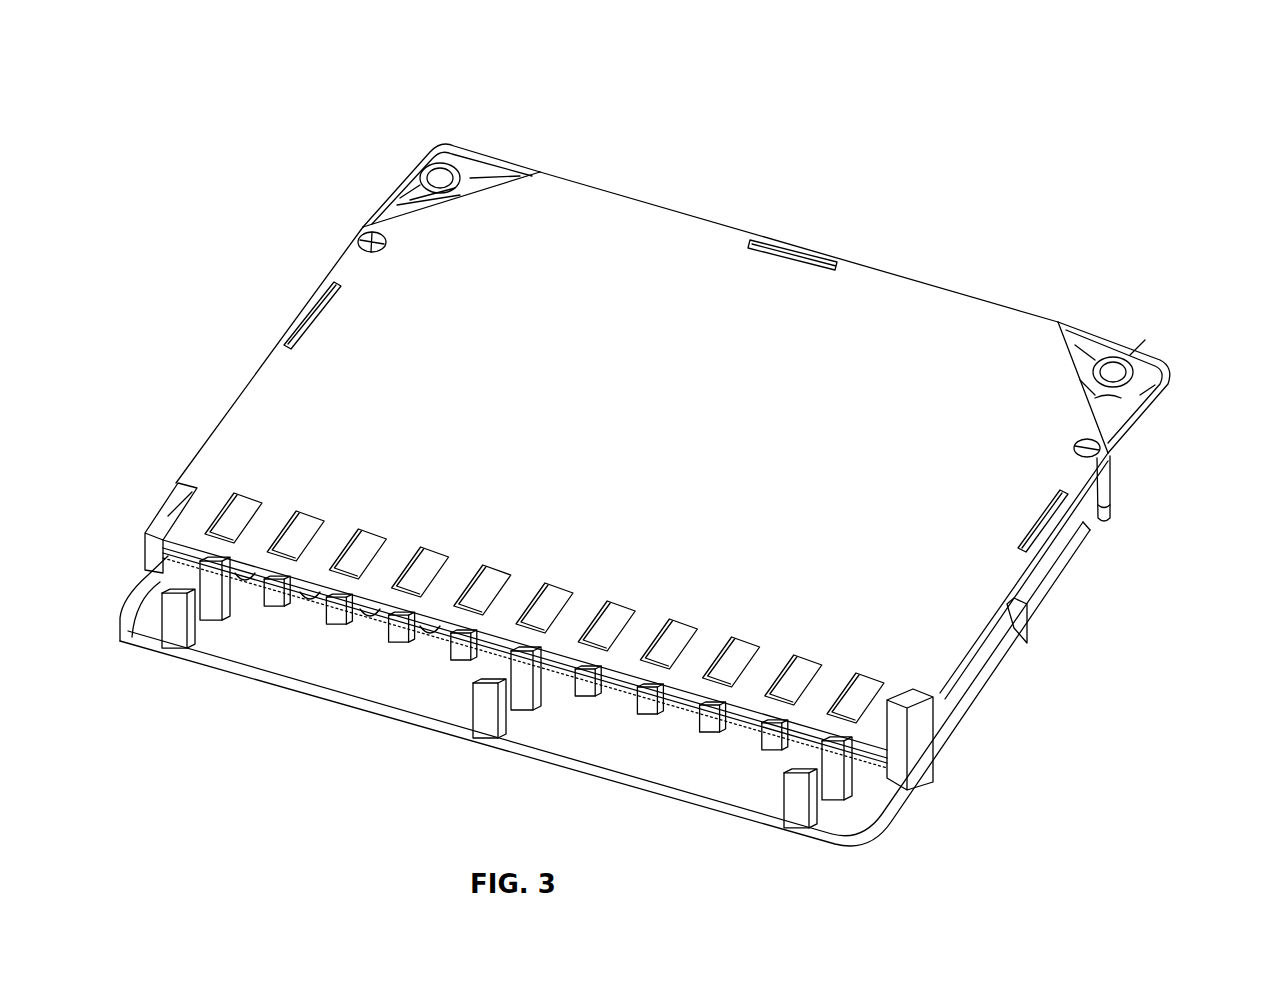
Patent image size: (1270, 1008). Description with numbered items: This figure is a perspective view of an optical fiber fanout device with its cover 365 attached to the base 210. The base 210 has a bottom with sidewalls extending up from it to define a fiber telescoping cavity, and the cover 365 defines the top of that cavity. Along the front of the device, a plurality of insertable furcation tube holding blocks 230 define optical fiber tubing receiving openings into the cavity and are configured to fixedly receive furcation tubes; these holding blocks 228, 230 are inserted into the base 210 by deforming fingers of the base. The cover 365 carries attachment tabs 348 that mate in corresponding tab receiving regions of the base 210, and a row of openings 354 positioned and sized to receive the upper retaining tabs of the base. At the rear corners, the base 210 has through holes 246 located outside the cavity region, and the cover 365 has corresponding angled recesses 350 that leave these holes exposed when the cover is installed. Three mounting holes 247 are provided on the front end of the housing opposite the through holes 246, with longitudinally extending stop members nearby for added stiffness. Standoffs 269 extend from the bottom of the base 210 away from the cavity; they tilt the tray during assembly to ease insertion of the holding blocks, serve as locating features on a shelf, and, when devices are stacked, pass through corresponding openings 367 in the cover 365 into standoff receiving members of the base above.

The base 210 is at (948, 718).
The holding block 228 is at (173, 565).
The furcation tube holding block 230 is at (553, 680).
The through hole 246 is at (440, 178).
The mounting hole 247 is at (200, 637).
The standoff 269 is at (1108, 522).
The attachment tab 348 is at (315, 298).
The angled recess 350 is at (512, 167).
The opening 354 is at (255, 493).
The cover 365 is at (1028, 332).
The opening 367 is at (366, 236).